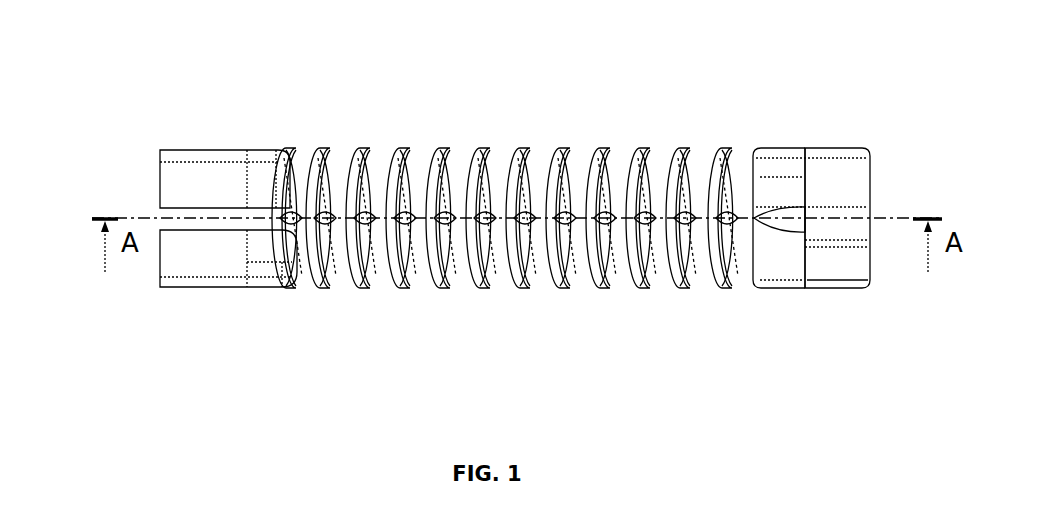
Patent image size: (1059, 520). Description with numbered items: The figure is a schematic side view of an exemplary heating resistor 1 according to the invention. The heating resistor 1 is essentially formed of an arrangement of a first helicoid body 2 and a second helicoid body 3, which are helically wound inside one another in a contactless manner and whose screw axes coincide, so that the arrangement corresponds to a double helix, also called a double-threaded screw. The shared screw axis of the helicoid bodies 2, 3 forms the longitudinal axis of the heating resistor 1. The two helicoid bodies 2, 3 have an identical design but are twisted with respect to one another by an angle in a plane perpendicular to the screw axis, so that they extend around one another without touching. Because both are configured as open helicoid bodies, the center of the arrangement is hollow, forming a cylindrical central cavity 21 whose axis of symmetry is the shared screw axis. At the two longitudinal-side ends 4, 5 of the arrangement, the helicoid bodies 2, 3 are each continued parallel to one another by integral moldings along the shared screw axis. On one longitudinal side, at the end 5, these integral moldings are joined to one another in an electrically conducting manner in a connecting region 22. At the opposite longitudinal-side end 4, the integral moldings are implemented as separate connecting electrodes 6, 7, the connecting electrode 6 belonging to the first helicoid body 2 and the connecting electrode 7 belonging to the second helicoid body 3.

The heating resistor 1 is at (502, 130).
The first helicoid body 2 is at (370, 167).
The second helicoid body 3 is at (358, 270).
The longitudinal-side end 4 is at (210, 302).
The longitudinal-side end 5 is at (842, 128).
The connecting electrode 6 is at (172, 180).
The connecting electrode 7 is at (172, 262).
The central cavity 21 is at (270, 213).
The connecting region 22 is at (840, 222).